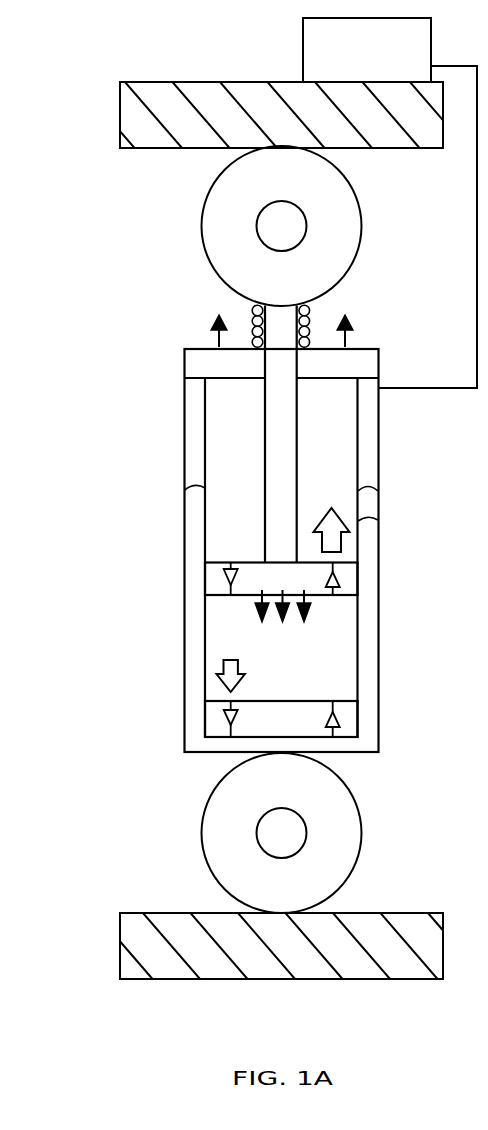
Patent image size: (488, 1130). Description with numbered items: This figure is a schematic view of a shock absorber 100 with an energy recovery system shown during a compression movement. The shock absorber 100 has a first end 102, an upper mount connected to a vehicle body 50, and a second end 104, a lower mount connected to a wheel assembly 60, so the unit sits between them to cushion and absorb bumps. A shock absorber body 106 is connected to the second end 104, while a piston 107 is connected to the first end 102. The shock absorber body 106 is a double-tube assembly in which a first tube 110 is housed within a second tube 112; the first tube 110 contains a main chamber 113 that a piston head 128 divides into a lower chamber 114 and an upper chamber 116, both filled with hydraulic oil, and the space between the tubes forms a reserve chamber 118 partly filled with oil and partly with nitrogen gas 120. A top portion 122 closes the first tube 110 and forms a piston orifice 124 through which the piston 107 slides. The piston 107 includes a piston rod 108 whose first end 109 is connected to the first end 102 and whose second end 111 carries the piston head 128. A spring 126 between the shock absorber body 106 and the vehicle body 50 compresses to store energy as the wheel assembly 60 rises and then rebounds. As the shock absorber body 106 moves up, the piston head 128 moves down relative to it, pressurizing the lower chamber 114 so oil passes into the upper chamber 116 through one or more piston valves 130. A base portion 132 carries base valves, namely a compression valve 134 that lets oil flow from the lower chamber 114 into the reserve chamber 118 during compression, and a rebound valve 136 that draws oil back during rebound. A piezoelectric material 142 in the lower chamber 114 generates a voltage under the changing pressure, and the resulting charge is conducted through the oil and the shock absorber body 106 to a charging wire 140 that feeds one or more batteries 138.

The vehicle body 50 is at (130, 118).
The wheel assembly 60 is at (133, 930).
The shock absorber 100 is at (106, 289).
The first end 102 is at (202, 225).
The second end 104 is at (217, 842).
The shock absorber body 106 is at (185, 473).
The piston 107 is at (254, 504).
The piston rod 108 is at (275, 412).
The first end of piston rod 109 is at (285, 316).
The first tube 110 is at (378, 520).
The second end of piston rod 111 is at (278, 553).
The second tube 112 is at (380, 493).
The main chamber 113 is at (359, 466).
The lower chamber 114 is at (332, 655).
The upper chamber 116 is at (338, 421).
The reserve chamber 118 is at (192, 670).
The nitrogen gas 120 is at (193, 422).
The top portion 122 is at (193, 365).
The piston orifice 124 is at (297, 362).
The spring 126 is at (252, 312).
The piston head 128 is at (218, 597).
The piston valves 130 is at (226, 578).
The base portion 132 is at (352, 727).
The compression valve 134 is at (228, 718).
The rebound valve 136 is at (335, 718).
The batteries 138 is at (324, 43).
The charging wire 140 is at (477, 242).
The piezoelectric material 142 is at (240, 698).